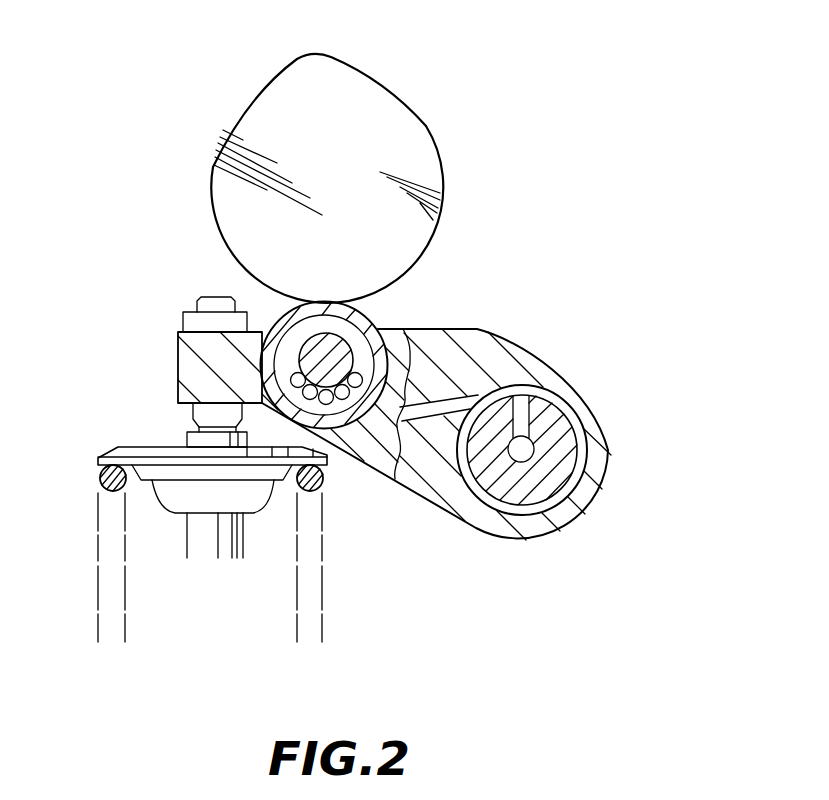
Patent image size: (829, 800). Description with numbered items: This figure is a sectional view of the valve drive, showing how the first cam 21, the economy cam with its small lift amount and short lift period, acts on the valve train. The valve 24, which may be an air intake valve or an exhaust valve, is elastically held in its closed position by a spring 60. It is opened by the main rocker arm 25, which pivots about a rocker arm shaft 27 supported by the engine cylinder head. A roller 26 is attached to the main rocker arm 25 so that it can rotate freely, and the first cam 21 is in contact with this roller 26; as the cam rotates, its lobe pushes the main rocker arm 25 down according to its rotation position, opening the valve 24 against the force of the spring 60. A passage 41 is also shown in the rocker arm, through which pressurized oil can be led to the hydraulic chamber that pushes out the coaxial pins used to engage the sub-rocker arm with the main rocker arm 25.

The first cam 21 is at (388, 98).
The valve 24 is at (212, 540).
The main rocker arm 25 is at (166, 361).
The roller 26 is at (360, 316).
The rocker arm shaft 27 is at (530, 517).
The passage 41 is at (443, 422).
The spring 60 is at (100, 481).